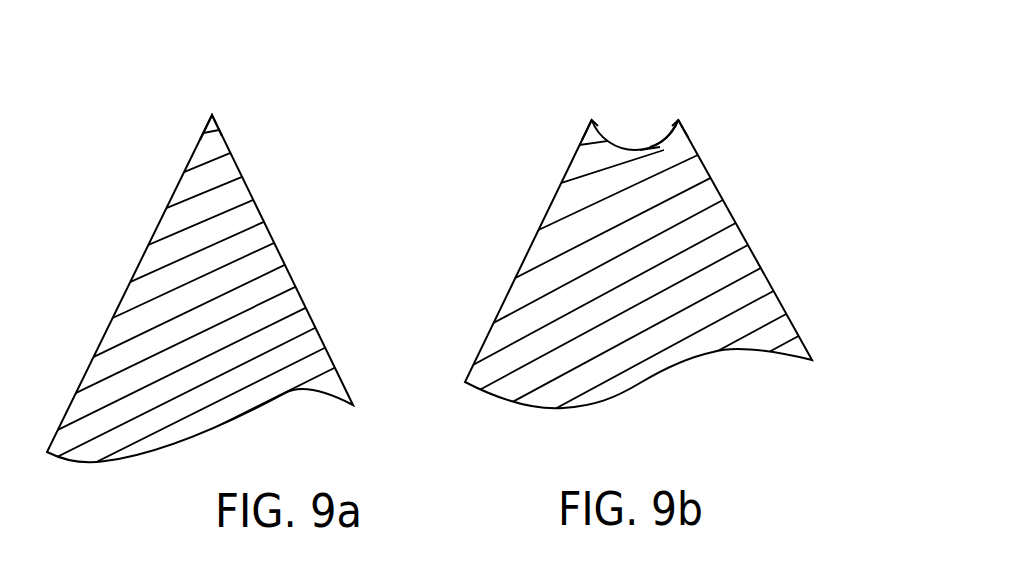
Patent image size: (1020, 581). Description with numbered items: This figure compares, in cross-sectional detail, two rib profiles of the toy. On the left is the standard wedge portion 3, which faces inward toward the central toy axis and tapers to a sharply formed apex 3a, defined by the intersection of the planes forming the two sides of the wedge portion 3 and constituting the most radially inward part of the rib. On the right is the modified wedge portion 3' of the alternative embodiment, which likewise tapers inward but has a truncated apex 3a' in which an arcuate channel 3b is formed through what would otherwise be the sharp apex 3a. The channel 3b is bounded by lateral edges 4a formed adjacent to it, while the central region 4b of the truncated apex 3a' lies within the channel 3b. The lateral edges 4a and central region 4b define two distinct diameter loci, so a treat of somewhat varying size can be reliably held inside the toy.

In FIG. 9a, the wedge portion 3 is at (208, 315).
In FIG. 9a, the apex 3a is at (276, 103).
In FIG. 9b, the modified wedge portion 3' is at (662, 320).
In FIG. 9b, the truncated apex 3a' is at (701, 105).
In FIG. 9b, the arcuate channel 3b is at (633, 142).
In FIG. 9b, the lateral edges 4a is at (592, 120).
In FIG. 9b, the central region 4b is at (655, 150).